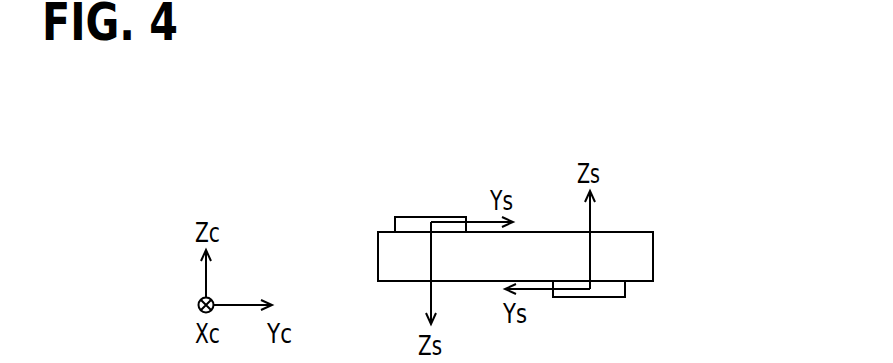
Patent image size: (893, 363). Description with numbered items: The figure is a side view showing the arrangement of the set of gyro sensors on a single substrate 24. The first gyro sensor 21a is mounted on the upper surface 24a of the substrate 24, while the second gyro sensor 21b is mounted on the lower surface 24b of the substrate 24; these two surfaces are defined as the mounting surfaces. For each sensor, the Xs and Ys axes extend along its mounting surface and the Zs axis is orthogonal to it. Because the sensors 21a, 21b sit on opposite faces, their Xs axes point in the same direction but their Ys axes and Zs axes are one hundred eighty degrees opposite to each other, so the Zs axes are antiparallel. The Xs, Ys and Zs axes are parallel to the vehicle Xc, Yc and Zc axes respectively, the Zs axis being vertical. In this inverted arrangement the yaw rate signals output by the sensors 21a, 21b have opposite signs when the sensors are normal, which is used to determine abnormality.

The substrate 24 is at (556, 164).
The upper surface 24a is at (637, 232).
The lower surface 24b is at (637, 282).
The first gyro sensor 21a is at (400, 216).
The second gyro sensor 21b is at (602, 297).